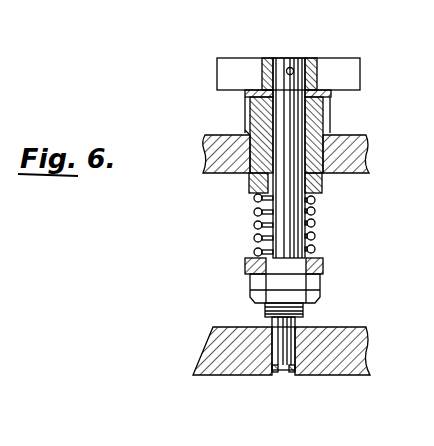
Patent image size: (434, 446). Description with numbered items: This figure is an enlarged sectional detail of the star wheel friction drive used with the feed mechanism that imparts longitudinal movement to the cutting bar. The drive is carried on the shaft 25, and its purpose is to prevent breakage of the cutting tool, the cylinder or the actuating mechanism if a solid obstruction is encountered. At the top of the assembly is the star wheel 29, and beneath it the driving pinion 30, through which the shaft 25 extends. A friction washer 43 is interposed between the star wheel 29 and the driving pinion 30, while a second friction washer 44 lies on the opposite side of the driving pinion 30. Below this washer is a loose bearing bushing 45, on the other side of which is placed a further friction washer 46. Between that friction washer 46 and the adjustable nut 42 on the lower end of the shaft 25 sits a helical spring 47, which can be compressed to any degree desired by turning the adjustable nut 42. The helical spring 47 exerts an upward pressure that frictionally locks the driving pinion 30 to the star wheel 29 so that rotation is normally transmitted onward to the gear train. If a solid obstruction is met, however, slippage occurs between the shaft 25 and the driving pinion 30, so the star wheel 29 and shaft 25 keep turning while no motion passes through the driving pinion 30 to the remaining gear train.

The shaft 25 is at (278, 66).
The star wheel 29 is at (348, 68).
The driving pinion 30 is at (325, 120).
The adjustable nut 42 is at (312, 287).
The friction washer 43 is at (244, 89).
The friction washer 44 is at (248, 134).
The loose bearing bushing 45 is at (245, 178).
The friction washer 46 is at (322, 183).
The helical spring 47 is at (318, 236).